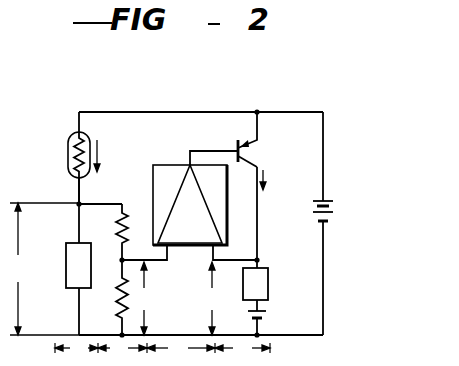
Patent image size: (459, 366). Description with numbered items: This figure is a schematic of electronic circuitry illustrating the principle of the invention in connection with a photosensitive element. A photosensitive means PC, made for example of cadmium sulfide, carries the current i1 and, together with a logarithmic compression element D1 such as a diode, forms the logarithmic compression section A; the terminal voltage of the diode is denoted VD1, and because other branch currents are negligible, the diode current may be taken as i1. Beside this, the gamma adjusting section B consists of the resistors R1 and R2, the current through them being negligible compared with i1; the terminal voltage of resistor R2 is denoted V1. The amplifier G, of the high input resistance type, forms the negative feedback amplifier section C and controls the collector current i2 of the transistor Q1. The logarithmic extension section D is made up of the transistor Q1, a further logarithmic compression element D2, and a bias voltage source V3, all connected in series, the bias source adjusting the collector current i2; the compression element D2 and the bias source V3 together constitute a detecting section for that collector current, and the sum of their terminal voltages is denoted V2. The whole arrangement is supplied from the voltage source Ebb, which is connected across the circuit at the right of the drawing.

The photosensitive means PC is at (67, 159).
The current through the photosensitive means i1 is at (103, 168).
The transistor Q1 is at (250, 150).
The amplifier G is at (190, 205).
The collector current i2 is at (270, 193).
The voltage source Ebb is at (334, 214).
The terminal voltage of diode D1 VD1 is at (42, 269).
The logarithmic compression element D1 is at (67, 286).
The resistor R1 is at (116, 230).
The resistor R2 is at (108, 297).
The terminal voltage of resistor R2 V1 is at (149, 298).
The sum of terminal voltages of D2 and V3 V2 is at (215, 298).
The logarithmic compression element D2 is at (269, 284).
The bias voltage source V3 is at (266, 318).
The logarithmic compression section A is at (76, 351).
The gamma adjusting section B is at (122, 351).
The negative feedback amplifier section C is at (181, 351).
The logarithmic extension section D is at (242, 351).